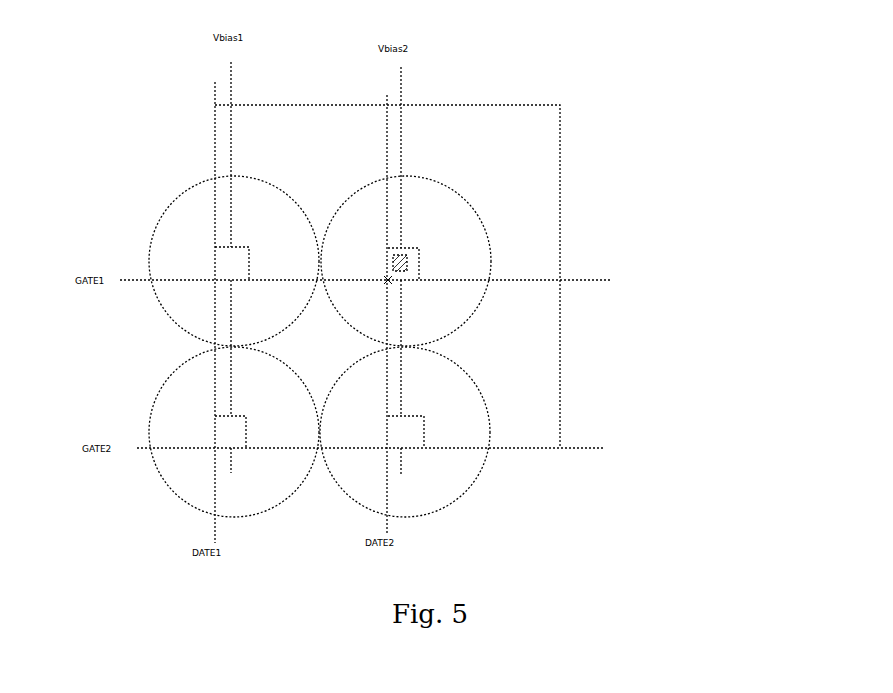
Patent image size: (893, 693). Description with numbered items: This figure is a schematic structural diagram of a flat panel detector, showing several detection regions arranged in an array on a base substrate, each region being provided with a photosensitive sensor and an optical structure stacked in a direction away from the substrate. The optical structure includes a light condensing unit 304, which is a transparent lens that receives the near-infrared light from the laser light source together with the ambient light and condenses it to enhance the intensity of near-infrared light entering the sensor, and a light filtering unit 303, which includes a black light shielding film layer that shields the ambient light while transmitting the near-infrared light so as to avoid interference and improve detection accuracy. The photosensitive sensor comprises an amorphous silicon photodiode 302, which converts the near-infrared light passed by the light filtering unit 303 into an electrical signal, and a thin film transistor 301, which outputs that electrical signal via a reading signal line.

The thin film transistor 301 is at (388, 280).
The amorphous silicon photodiode 302 is at (410, 272).
The light filtering unit 303 is at (419, 253).
The light condensing unit 304 is at (172, 203).